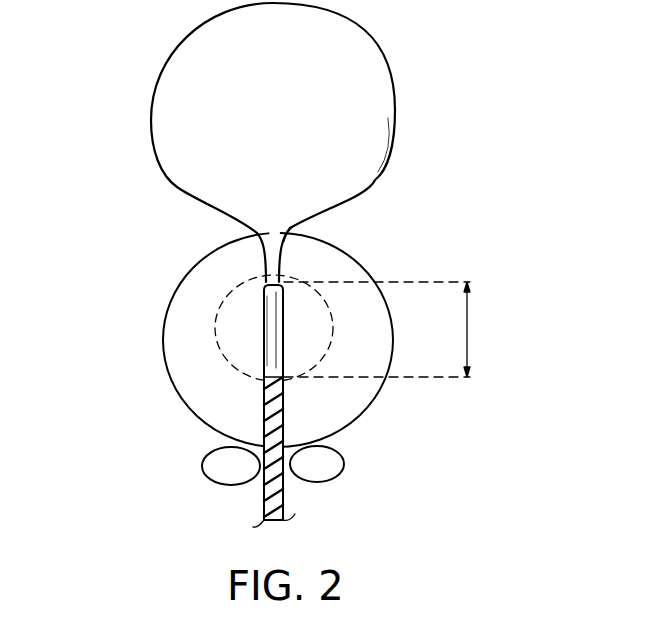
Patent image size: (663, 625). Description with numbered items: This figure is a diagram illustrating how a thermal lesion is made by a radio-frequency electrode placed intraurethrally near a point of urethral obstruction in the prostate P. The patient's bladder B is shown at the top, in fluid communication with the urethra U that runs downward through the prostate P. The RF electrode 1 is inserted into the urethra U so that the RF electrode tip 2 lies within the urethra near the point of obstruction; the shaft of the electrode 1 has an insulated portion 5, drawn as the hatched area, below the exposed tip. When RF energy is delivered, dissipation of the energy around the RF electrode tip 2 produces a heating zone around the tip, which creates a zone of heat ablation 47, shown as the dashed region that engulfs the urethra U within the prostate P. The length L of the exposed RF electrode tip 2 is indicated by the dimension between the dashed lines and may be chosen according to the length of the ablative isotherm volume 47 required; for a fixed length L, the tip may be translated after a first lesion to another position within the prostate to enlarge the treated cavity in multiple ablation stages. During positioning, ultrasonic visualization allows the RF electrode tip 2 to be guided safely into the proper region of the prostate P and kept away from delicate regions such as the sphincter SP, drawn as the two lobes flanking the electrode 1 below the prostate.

The RF electrode 1 is at (283, 413).
The RF electrode tip 2 is at (264, 336).
The insulated portion 5 is at (264, 436).
The zone of heat ablation 47 is at (213, 308).
The bladder B is at (172, 52).
The urethra U is at (266, 262).
The prostate P is at (355, 258).
The sphincter SP is at (202, 464).
The length of the exposed RF electrode tip L is at (385, 329).